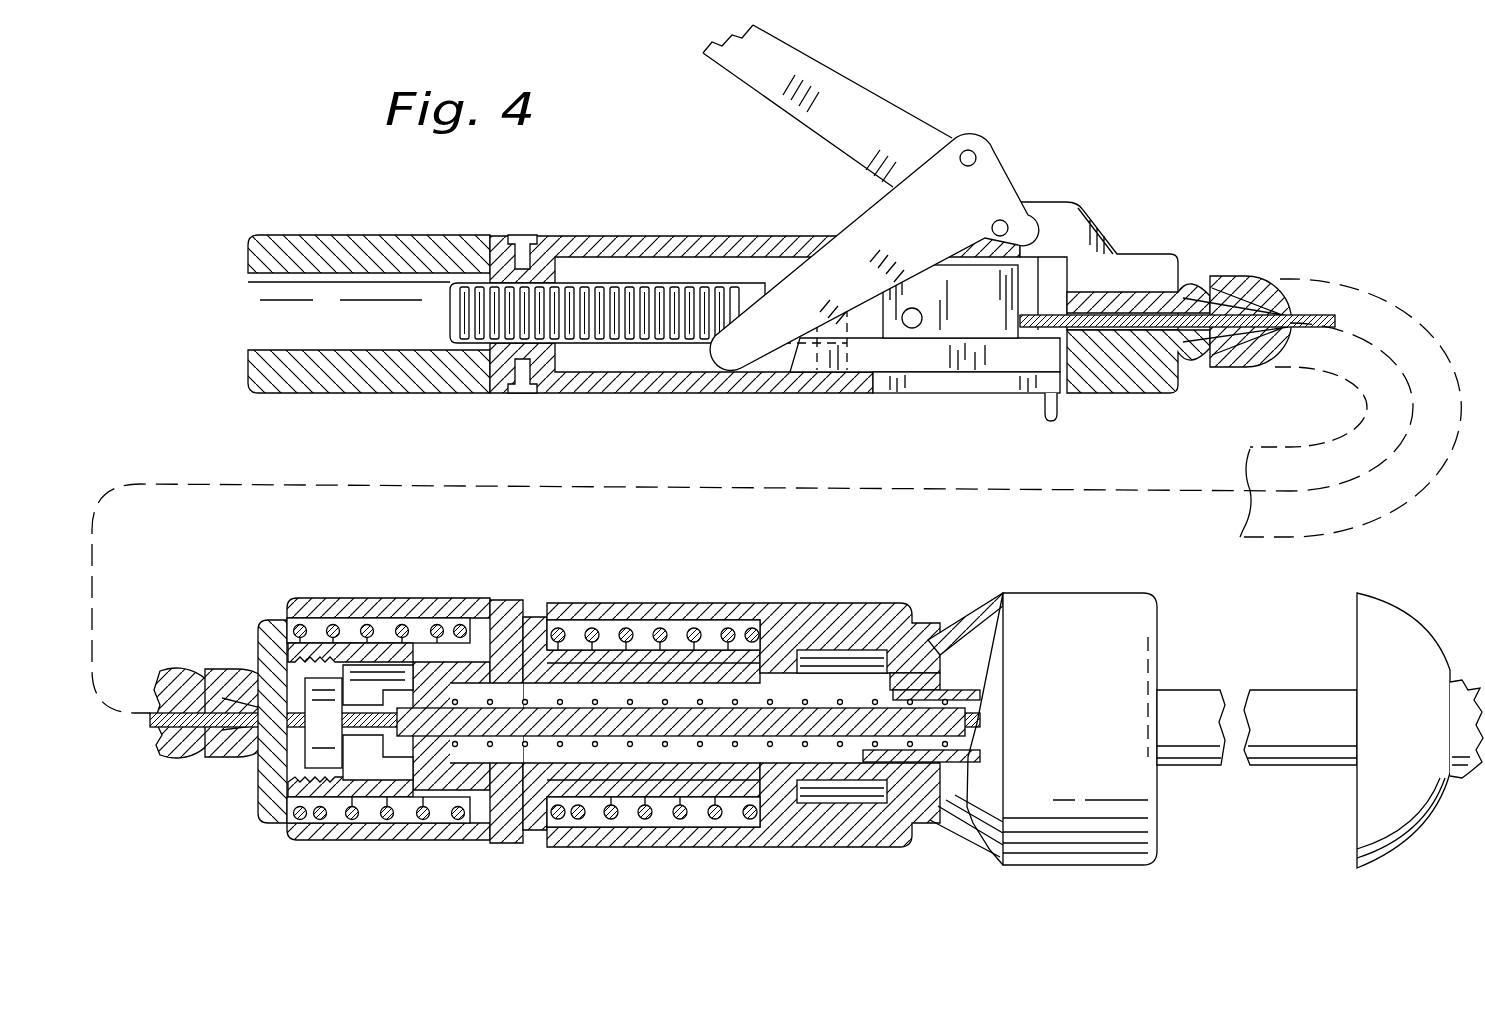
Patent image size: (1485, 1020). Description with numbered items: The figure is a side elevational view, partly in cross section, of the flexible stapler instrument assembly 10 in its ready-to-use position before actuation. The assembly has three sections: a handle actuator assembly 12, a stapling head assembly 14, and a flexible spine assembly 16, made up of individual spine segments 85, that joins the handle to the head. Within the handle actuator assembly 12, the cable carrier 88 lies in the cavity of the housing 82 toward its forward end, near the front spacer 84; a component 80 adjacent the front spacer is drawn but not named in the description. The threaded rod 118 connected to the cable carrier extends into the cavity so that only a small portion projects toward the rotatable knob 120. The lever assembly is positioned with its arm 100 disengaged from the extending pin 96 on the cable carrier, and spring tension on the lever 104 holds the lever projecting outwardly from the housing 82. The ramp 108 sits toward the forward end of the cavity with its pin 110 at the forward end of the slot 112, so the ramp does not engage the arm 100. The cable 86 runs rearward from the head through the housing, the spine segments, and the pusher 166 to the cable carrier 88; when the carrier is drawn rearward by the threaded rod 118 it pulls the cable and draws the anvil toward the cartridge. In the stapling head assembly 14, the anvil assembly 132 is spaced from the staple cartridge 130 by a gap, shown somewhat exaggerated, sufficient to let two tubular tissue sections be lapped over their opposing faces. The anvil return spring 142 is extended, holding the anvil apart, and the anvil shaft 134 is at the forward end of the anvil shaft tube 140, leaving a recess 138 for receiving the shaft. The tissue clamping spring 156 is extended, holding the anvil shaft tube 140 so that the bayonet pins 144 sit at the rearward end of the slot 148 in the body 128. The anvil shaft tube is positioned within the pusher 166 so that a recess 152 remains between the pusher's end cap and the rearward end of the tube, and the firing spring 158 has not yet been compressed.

The flexible stapler instrument assembly 10 is at (570, 398).
The handle actuator assembly 12 is at (1105, 219).
The stapling head assembly 14 is at (1270, 690).
The flexible spine assembly 16 is at (347, 485).
The end block 80 is at (1140, 400).
The housing 82 is at (725, 395).
The front spacer 84 is at (1195, 292).
The spine segments 85 is at (1262, 280).
The cable 86 is at (1310, 330).
The cable carrier 88 is at (852, 375).
The extending pin 96 is at (922, 312).
The arm 100 is at (870, 222).
The lever 104 is at (765, 88).
The ramp 108 is at (905, 360).
The pin 110 is at (1051, 424).
The slot 112 is at (988, 385).
The threaded rod 118 is at (478, 292).
The rotatable knob 120 is at (380, 237).
The body 128 is at (660, 605).
The staple cartridge 130 is at (1090, 600).
The anvil assembly 132 is at (1422, 586).
The anvil shaft 134 is at (973, 783).
The recess 138 is at (835, 760).
The anvil shaft tube 140 is at (430, 757).
The anvil return spring 142 is at (805, 722).
The bayonet pins 144 is at (512, 630).
The slot 148 is at (545, 603).
The recess 152 is at (375, 760).
The tissue clamping spring 156 is at (735, 640).
The firing spring 158 is at (435, 620).
The pusher 166 is at (608, 828).